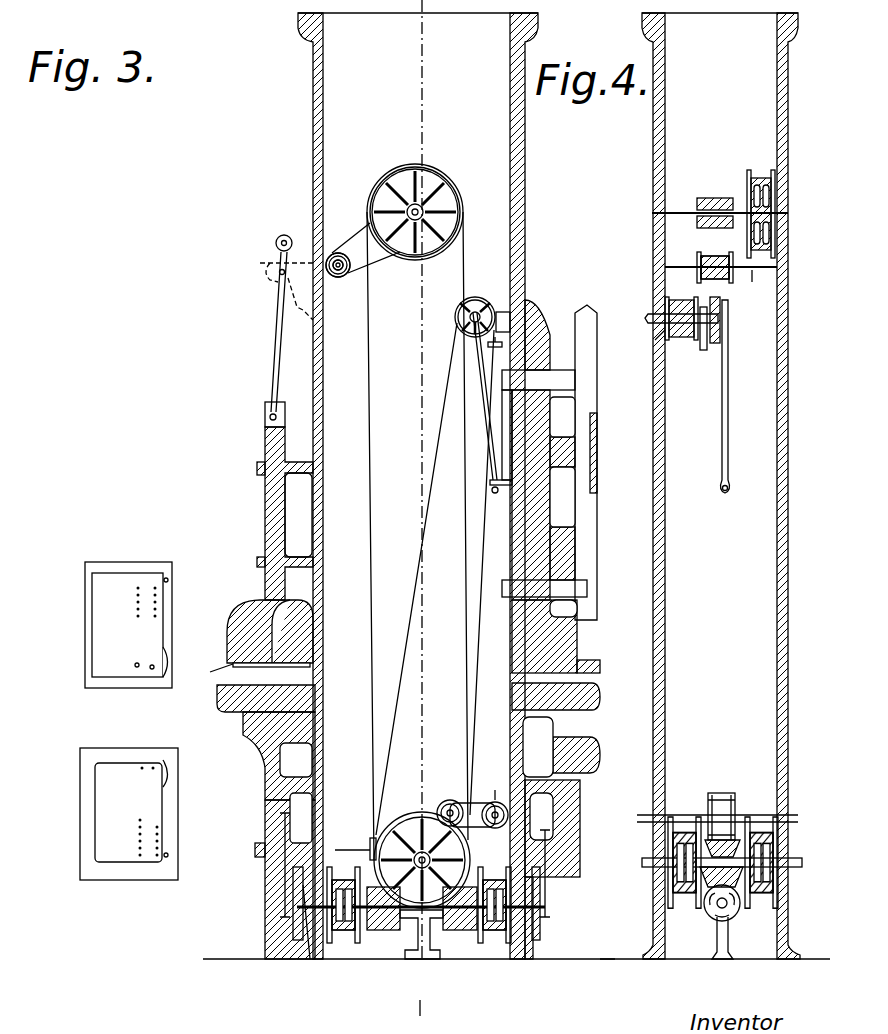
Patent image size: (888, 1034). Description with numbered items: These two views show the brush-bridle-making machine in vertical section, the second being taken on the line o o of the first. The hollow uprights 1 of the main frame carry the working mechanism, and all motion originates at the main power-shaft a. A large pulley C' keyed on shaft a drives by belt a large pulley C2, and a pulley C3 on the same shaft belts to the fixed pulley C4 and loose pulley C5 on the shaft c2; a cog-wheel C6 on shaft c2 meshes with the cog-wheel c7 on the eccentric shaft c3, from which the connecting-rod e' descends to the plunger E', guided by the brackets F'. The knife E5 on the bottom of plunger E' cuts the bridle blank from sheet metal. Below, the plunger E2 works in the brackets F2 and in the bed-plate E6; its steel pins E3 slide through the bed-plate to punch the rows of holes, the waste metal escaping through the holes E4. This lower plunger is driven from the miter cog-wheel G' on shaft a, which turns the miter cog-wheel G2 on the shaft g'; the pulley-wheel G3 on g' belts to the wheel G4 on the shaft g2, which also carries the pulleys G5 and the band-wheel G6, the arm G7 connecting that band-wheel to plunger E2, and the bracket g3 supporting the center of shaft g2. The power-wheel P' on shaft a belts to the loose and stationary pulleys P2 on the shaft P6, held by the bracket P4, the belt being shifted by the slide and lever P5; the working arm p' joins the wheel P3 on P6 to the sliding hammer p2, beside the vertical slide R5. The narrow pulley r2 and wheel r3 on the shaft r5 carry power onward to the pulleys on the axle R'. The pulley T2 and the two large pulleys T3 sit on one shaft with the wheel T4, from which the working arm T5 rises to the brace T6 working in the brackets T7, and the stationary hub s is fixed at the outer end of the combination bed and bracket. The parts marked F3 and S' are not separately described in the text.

In FIG. 3, the hollow uprights 1 is at (418, 486).
In FIG. 4, the hollow uprights 1 is at (721, 486).
In FIG. 3, the pulley C3 is at (419, 206).
In FIG. 4, the pulley C3 is at (712, 198).
In FIG. 3, the large pulley C2 is at (448, 196).
In FIG. 4, the large pulley C2 is at (749, 180).
In FIG. 3, the large pulley C' is at (423, 545).
In FIG. 4, the large pulley C' is at (708, 551).
In FIG. 3, the stationary pulley C4 is at (342, 254).
In FIG. 4, the stationary pulley C4 is at (705, 257).
In FIG. 3, the loose pulley C5 is at (332, 255).
In FIG. 4, the loose pulley C5 is at (722, 258).
In FIG. 4, the cog-wheel C6 is at (760, 268).
In FIG. 3, the shaft c2 is at (338, 270).
In FIG. 4, the shaft c2 is at (758, 282).
In FIG. 3, the eccentric shaft c3 is at (280, 273).
In FIG. 3, the cog-wheel c7 is at (300, 263).
In FIG. 3, the connecting-rod e' is at (269, 323).
In FIG. 3, the plunger E' is at (272, 501).
In FIG. 3, the brackets F' is at (298, 515).
In FIG. 3, the holes E4 is at (140, 895).
In FIG. 3, the knife E5 is at (92, 636).
In FIG. 3, the bed-plate E6 is at (177, 771).
In FIG. 3, the steel pins E3 is at (340, 697).
In FIG. 3, the plunger E2 is at (270, 756).
In FIG. 3, the lower recess F3 is at (296, 760).
In FIG. 3, the brackets F2 is at (285, 876).
In FIG. 3, the wheel P3 is at (477, 300).
In FIG. 4, the wheel P3 is at (722, 300).
In FIG. 3, the shaft P6 is at (462, 305).
In FIG. 4, the shaft P6 is at (648, 316).
In FIG. 3, the bracket P4 is at (500, 312).
In FIG. 4, the bracket P4 is at (703, 350).
In FIG. 3, the slide and lever P5 is at (497, 353).
In FIG. 4, the slide and lever P5 is at (650, 342).
In FIG. 3, the working arm p' is at (489, 403).
In FIG. 4, the working arm p' is at (716, 396).
In FIG. 3, the sliding hammer p2 is at (574, 378).
In FIG. 3, the vertical slide R5 is at (545, 335).
In FIG. 3, the brace T6 is at (562, 686).
In FIG. 3, the stationary hub s is at (600, 697).
In FIG. 3, the recess S' is at (538, 747).
In FIG. 3, the brackets T7 is at (583, 828).
In FIG. 3, the bracket g3 is at (424, 953).
In FIG. 3, the section line o is at (418, 1017).
In FIG. 3, the pulley-wheel G4 is at (385, 932).
In FIG. 3, the pulley T2 is at (458, 932).
In FIG. 3, the pulleys G5 is at (343, 945).
In FIG. 3, the large pulleys T3 is at (490, 945).
In FIG. 3, the band-wheel G6 is at (293, 930).
In FIG. 3, the arm G7 is at (284, 882).
In FIG. 3, the wheel T4 is at (540, 930).
In FIG. 3, the working arm T5 is at (547, 890).
In FIG. 3, the shaft g2 is at (302, 945).
In FIG. 4, the shaft g2 is at (725, 912).
In FIG. 3, the shaft g' is at (352, 847).
In FIG. 3, the pulley-wheel G3 is at (352, 852).
In FIG. 3, the wheel r3 is at (446, 803).
In FIG. 3, the axle R' is at (471, 804).
In FIG. 4, the axle R' is at (713, 805).
In FIG. 3, the narrow pulley r2 is at (497, 805).
In FIG. 3, the shaft r5 is at (492, 784).
In FIG. 4, the pulleys P2 is at (683, 300).
In FIG. 4, the power-wheel P' is at (684, 846).
In FIG. 4, the miter cog-wheel G' is at (685, 825).
In FIG. 4, the miter cog-wheel G2 is at (710, 875).
In FIG. 4, the main power-shaft a is at (800, 867).